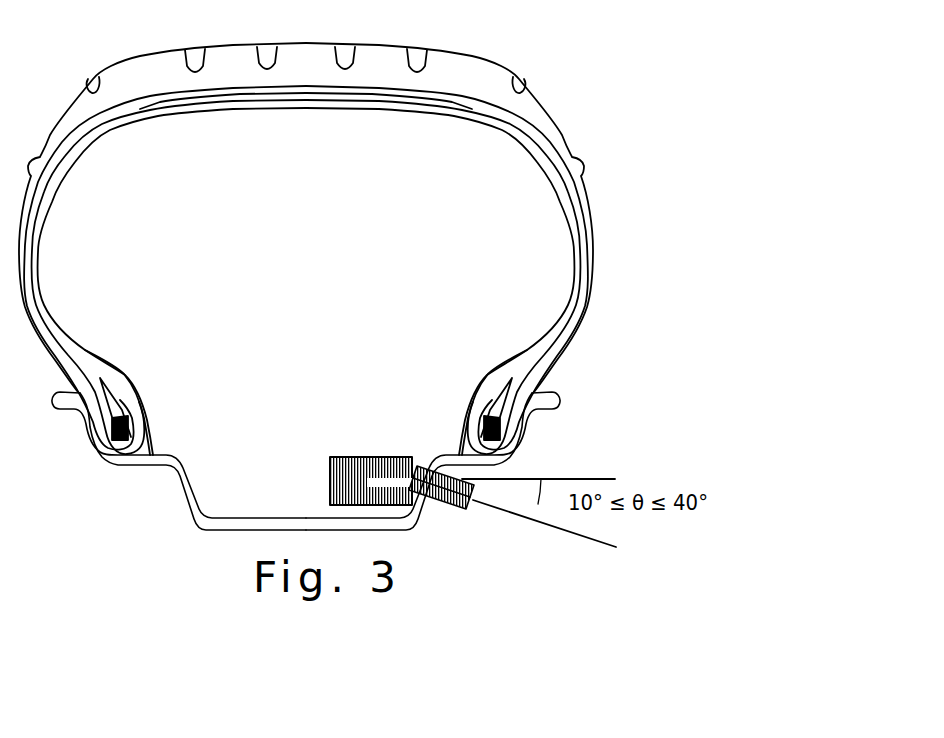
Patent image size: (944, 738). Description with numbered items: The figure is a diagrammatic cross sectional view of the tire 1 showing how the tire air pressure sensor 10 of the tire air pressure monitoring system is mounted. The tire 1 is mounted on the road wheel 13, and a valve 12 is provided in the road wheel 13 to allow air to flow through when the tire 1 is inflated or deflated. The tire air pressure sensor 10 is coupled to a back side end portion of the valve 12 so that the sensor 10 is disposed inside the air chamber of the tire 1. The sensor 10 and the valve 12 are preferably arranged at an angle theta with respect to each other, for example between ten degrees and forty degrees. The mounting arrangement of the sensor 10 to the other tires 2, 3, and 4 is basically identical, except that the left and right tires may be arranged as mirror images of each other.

The tire 1 is at (549, 98).
The tire 2 is at (306, 249).
The tire 3 is at (306, 249).
The tire 4 is at (306, 249).
The tire air pressure sensor 10 is at (367, 450).
The valve 12 is at (478, 506).
The road wheel 13 is at (182, 481).